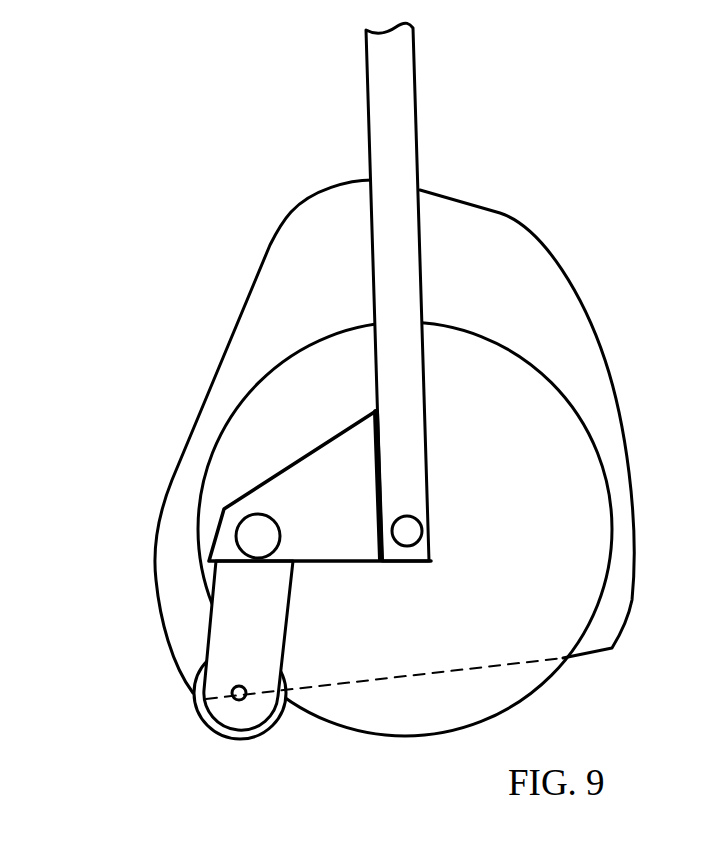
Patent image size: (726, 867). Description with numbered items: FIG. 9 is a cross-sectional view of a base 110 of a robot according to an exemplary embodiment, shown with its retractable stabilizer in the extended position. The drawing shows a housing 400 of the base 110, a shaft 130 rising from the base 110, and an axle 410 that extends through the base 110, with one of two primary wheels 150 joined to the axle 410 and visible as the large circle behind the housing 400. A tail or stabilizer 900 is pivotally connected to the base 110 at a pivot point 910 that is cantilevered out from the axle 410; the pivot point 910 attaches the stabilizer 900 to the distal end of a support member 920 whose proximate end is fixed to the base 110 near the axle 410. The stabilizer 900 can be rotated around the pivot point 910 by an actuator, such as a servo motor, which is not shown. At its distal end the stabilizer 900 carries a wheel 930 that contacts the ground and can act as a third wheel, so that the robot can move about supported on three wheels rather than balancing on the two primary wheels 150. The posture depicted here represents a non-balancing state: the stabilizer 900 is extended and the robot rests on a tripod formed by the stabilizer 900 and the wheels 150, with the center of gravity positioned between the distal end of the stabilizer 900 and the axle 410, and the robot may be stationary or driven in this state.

The base 110 is at (537, 166).
The shaft 130 is at (369, 137).
The housing 400 is at (270, 242).
The wheel 150 is at (575, 408).
The support member 920 is at (350, 424).
The pivot point 910 is at (262, 535).
The axle 410 is at (423, 534).
The stabilizer 900 is at (287, 612).
The wheel 930 is at (255, 735).